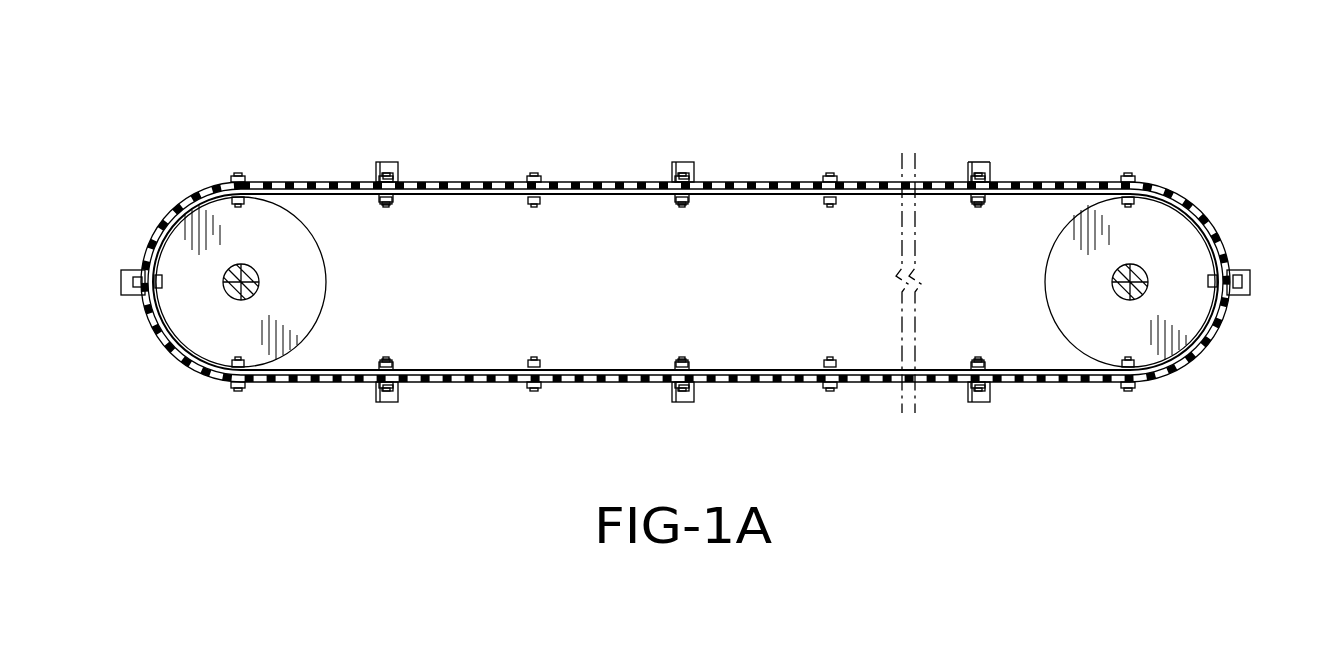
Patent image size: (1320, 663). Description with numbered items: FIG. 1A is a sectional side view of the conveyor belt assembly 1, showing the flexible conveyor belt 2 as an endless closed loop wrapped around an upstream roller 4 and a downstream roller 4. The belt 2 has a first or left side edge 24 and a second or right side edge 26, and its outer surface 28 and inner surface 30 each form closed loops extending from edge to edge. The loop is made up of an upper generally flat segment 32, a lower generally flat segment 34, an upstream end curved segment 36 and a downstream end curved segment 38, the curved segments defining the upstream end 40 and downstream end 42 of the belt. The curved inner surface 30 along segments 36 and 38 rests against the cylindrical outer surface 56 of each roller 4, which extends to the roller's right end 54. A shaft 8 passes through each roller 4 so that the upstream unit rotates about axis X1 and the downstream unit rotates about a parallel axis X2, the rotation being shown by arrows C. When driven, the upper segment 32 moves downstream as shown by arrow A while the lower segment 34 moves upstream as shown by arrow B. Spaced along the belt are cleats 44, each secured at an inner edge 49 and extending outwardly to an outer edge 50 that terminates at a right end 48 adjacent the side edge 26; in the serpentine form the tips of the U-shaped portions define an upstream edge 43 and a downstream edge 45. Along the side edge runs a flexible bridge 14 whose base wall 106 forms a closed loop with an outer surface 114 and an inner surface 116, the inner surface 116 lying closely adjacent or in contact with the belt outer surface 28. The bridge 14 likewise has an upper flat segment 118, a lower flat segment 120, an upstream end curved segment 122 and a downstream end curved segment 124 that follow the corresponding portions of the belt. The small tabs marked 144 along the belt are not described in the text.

The conveyor belt assembly 1 is at (1102, 93).
The conveyor belt 2 is at (682, 271).
The roller 4 is at (685, 282).
The shaft 8 is at (660, 288).
The flexible bridge 14 is at (682, 271).
The first side edge 24 is at (685, 330).
The second side edge 26 is at (682, 271).
The outer surface 28 is at (347, 182).
The inner surface 30 is at (685, 282).
The upper flat segment 32 is at (685, 232).
The lower flat segment 34 is at (502, 368).
The upstream end curved segment 36 is at (168, 330).
The downstream end curved segment 38 is at (1206, 326).
The upstream end 40 is at (140, 258).
The downstream end 42 is at (1232, 262).
The upstream edge 43 is at (966, 173).
The cleat 44 is at (685, 260).
The downstream edge 45 is at (999, 172).
The right end 48 is at (397, 175).
The inner edge 49 is at (398, 204).
The outer edge 50 is at (685, 260).
The right end 54 is at (685, 282).
The cylindrical outer surface 56 is at (323, 283).
The base wall 106 is at (682, 271).
The outer surface 114 is at (632, 186).
The inner surface 116 is at (578, 192).
The upper flat segment 118 is at (475, 181).
The lower flat segment 120 is at (468, 384).
The upstream end curved segment 122 is at (141, 318).
The downstream end curved segment 124 is at (1222, 336).
The marker tab 144 is at (237, 175).
The axis X1 is at (224, 276).
The axis X2 is at (1113, 278).
The arrow A is at (846, 148).
The arrow B is at (759, 425).
The arrow C is at (302, 292).